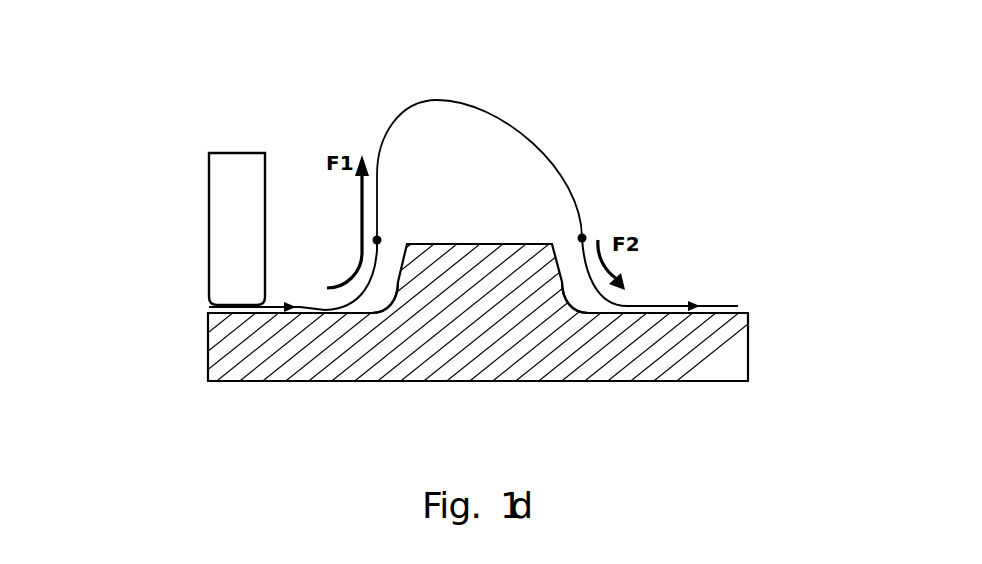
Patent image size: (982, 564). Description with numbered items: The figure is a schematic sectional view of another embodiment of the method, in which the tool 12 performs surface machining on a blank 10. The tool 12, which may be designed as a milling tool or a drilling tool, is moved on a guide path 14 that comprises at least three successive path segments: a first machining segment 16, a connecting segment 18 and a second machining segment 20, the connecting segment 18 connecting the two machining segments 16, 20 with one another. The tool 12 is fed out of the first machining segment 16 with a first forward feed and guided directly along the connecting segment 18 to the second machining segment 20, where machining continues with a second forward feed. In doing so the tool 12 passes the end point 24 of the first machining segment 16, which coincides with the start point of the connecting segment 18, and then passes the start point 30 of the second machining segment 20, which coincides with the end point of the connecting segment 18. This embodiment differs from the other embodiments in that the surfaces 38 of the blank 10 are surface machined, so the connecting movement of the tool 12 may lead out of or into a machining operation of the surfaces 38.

The blank 10 is at (718, 343).
The tool 12 is at (238, 170).
The guide path 14 is at (545, 113).
The first machining segment 16 is at (328, 305).
The connecting segment 18 is at (473, 105).
The second machining segment 20 is at (707, 302).
The end point of the first machining segment 24 is at (377, 240).
The start point of the second machining segment 30 is at (582, 238).
The surfaces 38 is at (366, 311).